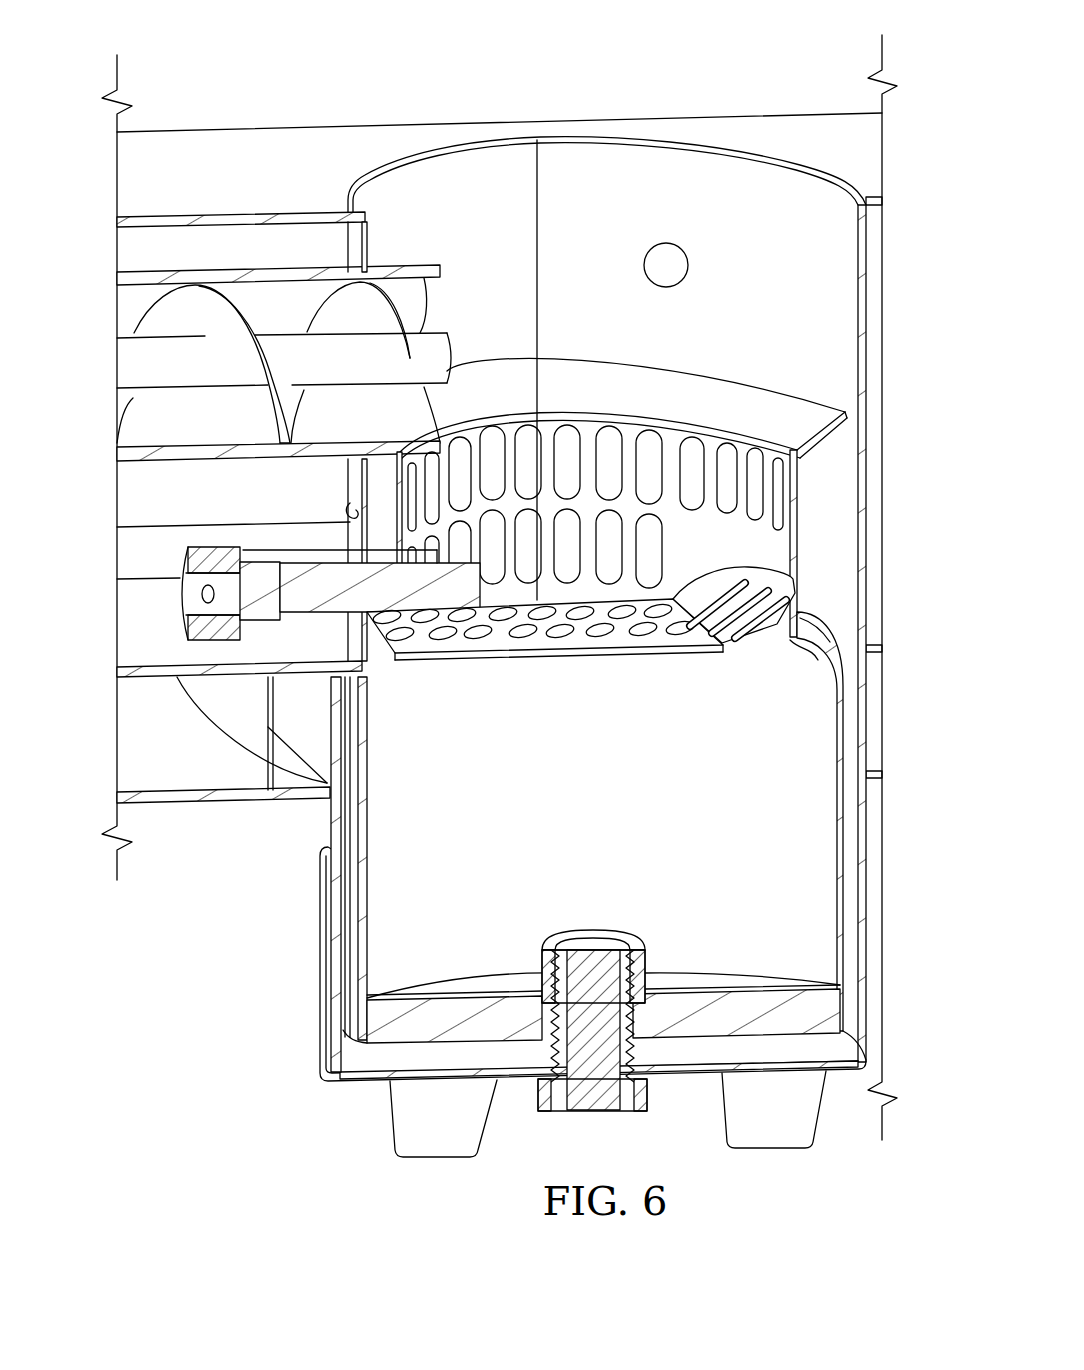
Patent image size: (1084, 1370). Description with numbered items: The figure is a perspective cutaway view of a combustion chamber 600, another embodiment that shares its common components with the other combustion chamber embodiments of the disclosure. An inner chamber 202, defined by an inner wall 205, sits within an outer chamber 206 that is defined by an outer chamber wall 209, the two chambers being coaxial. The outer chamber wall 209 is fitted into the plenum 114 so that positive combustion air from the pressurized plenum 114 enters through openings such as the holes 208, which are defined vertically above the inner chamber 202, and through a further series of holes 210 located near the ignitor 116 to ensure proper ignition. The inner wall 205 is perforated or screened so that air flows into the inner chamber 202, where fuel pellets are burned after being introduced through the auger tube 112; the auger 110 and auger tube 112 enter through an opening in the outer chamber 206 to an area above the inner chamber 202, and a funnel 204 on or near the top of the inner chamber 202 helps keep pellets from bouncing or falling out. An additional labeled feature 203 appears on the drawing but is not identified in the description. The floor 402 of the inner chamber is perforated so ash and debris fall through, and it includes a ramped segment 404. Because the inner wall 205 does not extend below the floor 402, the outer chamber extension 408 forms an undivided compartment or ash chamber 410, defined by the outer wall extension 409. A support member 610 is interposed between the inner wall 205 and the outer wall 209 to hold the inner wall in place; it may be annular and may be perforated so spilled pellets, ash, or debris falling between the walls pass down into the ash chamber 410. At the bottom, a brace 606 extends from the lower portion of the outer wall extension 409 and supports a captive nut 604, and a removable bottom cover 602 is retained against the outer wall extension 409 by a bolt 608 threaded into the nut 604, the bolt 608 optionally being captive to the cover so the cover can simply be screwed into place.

The combustion chamber 600 is at (797, 63).
The plenum 114 is at (267, 140).
The outer chamber wall 209 is at (718, 163).
The holes 208 is at (686, 252).
The inner chamber 202 is at (497, 440).
The funnel 204 is at (615, 367).
The slot 203 is at (720, 442).
The outer chamber 206 is at (787, 369).
The inner wall 205 is at (797, 482).
The auger 110 is at (280, 430).
The auger tube 112 is at (200, 462).
The holes 210 is at (348, 506).
The ignitor 116 is at (182, 620).
The floor 402 is at (540, 650).
The ramped segment 404 is at (770, 612).
The support member 610 is at (812, 630).
The outer wall extension 409 is at (862, 800).
The outer chamber extension 408 is at (814, 866).
The ash chamber 410 is at (398, 908).
The captive nut 604 is at (612, 931).
The brace 606 is at (757, 998).
The bottom cover 602 is at (345, 1081).
The bolt 608 is at (593, 1112).